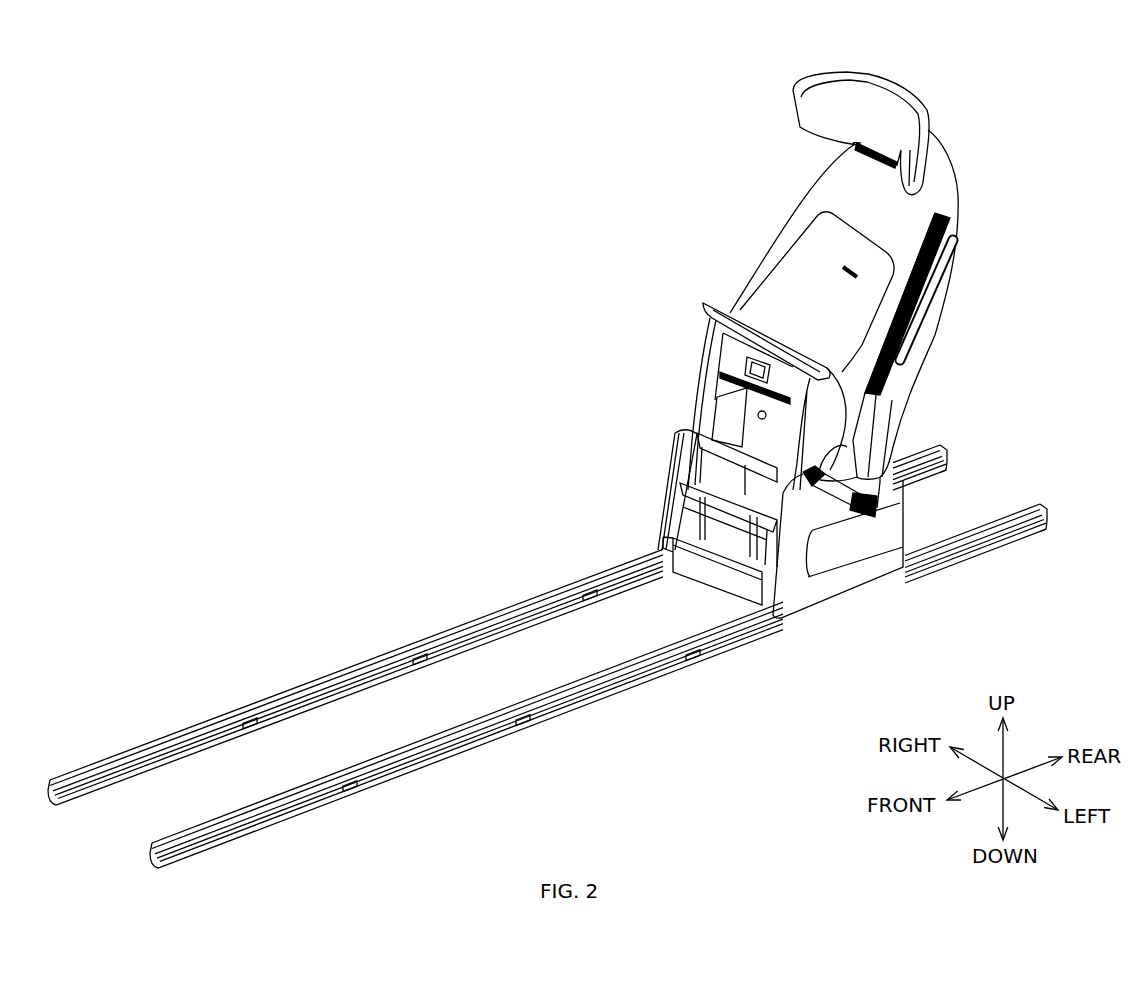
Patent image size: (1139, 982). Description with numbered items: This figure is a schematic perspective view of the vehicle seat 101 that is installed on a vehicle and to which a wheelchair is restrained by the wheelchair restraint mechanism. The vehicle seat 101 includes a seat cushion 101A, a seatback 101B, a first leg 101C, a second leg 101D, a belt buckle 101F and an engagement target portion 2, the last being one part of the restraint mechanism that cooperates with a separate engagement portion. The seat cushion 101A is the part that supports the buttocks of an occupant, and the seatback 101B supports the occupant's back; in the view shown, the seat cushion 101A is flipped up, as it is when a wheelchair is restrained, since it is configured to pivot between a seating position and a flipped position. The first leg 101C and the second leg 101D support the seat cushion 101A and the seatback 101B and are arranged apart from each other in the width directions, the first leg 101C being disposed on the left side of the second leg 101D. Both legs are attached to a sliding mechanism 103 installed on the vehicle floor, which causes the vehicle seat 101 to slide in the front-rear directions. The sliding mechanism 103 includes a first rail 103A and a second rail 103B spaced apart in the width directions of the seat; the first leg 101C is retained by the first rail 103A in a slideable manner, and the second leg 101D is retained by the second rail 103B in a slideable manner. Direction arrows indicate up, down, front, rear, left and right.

The vehicle seat 101 is at (801, 322).
The seat cushion 101A is at (720, 352).
The seatback 101B is at (903, 213).
The first leg 101C is at (888, 534).
The second leg 101D is at (673, 462).
The belt buckle 101F is at (818, 477).
The engagement target portion 2 is at (721, 582).
The sliding mechanism 103 is at (547, 656).
The first rail 103A is at (537, 713).
The second rail 103B is at (380, 658).